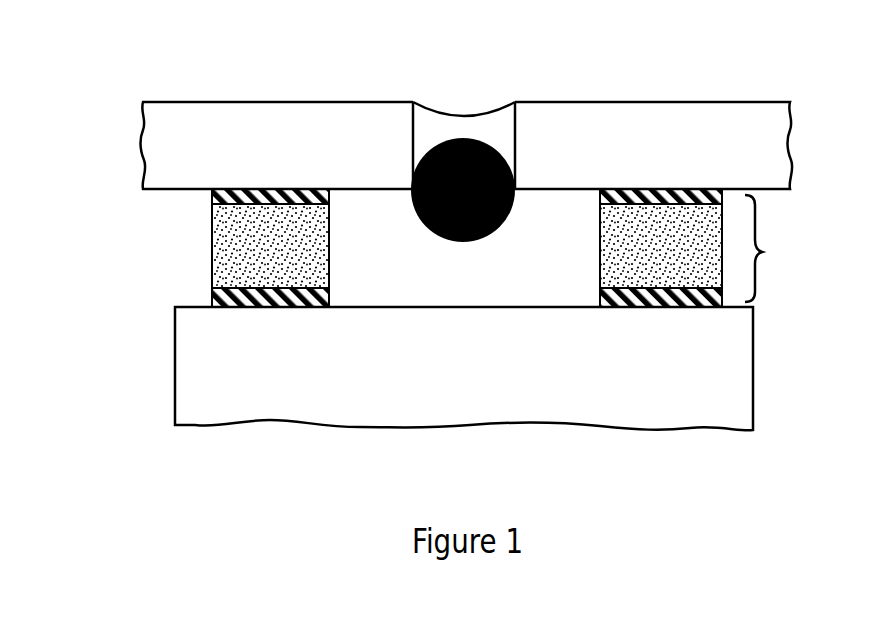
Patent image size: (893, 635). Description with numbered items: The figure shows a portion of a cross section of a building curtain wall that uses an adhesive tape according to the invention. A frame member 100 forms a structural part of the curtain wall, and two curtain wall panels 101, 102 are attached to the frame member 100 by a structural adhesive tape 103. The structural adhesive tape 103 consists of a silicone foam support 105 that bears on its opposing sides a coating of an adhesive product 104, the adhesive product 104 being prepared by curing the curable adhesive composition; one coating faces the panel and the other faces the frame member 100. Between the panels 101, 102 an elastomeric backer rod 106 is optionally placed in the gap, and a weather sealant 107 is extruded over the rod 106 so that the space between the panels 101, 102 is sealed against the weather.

The frame member 100 is at (464, 368).
The curtain wall panel 101 is at (276, 145).
The curtain wall panel 102 is at (653, 145).
The structural adhesive tape 103 is at (781, 248).
The adhesive product 104 is at (211, 191).
The silicone foam support 105 is at (211, 247).
The elastomeric backer rod 106 is at (497, 223).
The weather sealant 107 is at (458, 124).